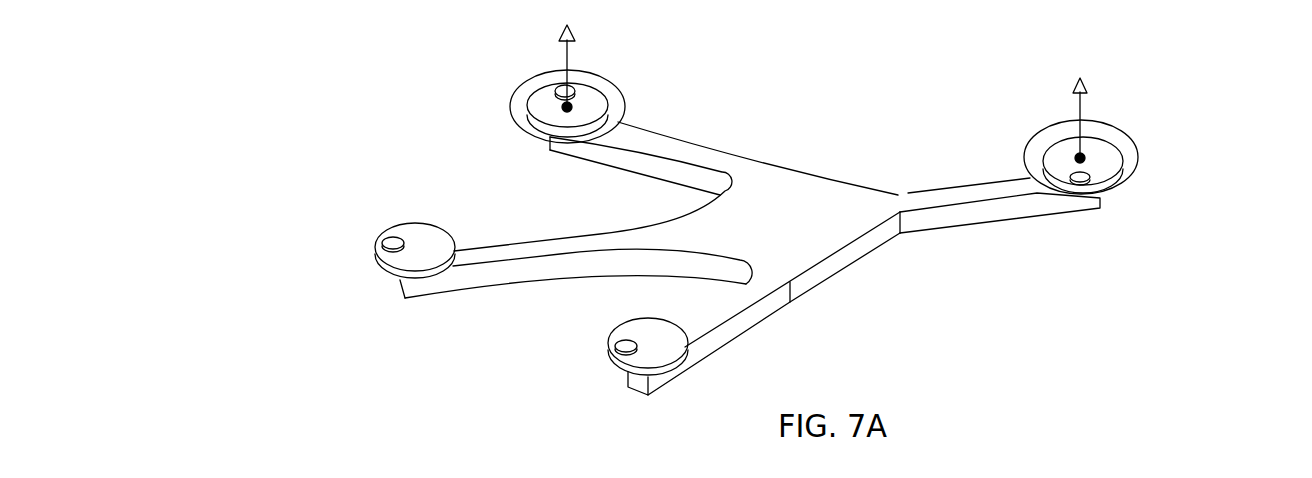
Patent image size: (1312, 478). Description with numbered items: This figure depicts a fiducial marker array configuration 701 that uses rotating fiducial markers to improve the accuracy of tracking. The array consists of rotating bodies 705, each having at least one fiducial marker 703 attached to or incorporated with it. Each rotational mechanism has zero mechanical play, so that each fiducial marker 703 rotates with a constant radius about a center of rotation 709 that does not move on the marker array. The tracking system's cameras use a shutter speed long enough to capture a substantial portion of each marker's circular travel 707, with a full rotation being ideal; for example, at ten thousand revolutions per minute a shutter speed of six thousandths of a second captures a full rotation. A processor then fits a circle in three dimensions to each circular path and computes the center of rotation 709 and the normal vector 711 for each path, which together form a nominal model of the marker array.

The fiducial marker array configuration 701 is at (758, 160).
The fiducial marker 703 is at (373, 245).
The rotating body 705 is at (378, 268).
The circular travel 707 is at (1138, 160).
The center of rotation 709 is at (1077, 156).
The normal vector 711 is at (1087, 90).